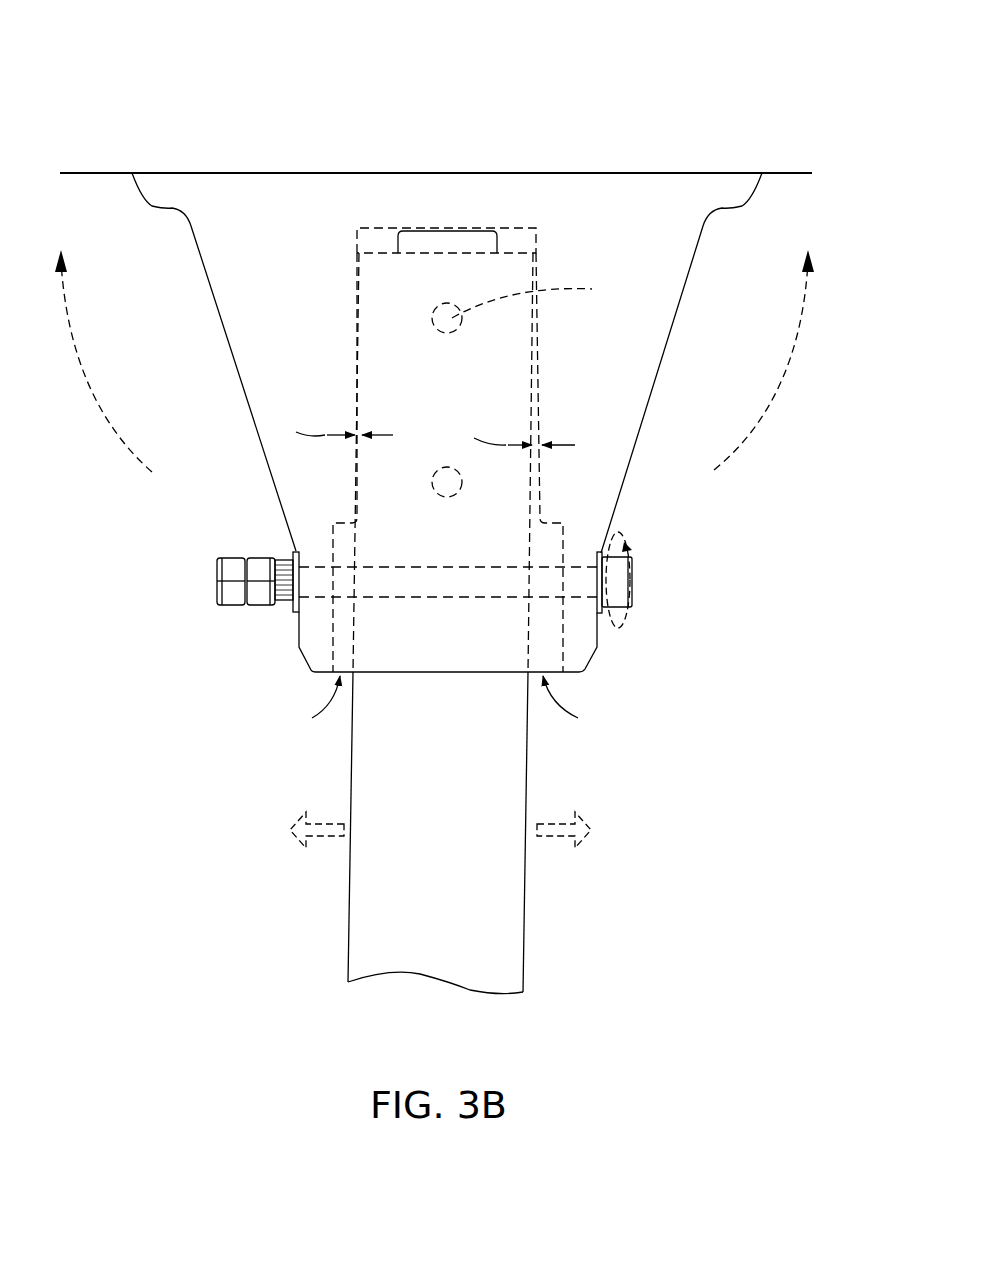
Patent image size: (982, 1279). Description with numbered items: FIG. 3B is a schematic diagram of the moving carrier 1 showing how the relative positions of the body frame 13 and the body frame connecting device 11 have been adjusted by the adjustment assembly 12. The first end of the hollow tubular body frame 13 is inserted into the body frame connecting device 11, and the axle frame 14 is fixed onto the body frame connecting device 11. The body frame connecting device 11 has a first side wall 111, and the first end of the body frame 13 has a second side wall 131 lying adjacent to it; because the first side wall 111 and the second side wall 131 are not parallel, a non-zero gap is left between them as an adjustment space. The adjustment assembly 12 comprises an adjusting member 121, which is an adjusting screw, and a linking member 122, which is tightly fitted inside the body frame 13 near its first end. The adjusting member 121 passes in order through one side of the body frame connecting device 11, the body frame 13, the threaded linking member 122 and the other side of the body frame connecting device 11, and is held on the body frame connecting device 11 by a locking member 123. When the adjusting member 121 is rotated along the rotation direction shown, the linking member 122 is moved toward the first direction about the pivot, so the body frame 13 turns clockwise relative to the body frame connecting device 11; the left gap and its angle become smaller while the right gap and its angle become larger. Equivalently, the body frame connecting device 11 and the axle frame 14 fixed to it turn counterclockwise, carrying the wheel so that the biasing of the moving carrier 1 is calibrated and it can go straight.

The moving carrier 1 is at (180, 56).
The body frame connecting device 11 is at (657, 275).
The first side wall 111 is at (352, 457).
The adjustment assembly 12 is at (634, 557).
The adjusting member 121 is at (610, 578).
The linking member 122 is at (520, 362).
The locking member 123 is at (233, 590).
The body frame 13 is at (512, 893).
The second side wall 131 is at (352, 392).
The axle frame 14 is at (682, 173).